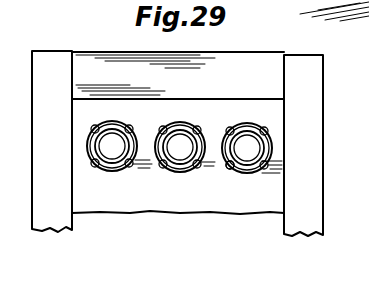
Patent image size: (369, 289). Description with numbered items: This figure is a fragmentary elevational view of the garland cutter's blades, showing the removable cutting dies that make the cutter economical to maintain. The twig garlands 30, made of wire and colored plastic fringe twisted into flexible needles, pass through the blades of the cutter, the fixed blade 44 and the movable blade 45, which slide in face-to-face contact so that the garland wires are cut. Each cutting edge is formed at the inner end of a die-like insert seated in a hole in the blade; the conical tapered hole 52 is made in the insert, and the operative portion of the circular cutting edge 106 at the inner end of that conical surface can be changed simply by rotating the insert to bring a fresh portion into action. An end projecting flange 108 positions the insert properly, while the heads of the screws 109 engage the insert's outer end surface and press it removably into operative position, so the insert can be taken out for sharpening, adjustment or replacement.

The twig garlands 30 is at (83, 118).
The fixed blade 44 is at (262, 62).
The movable blade 45 is at (218, 105).
The tapered hole 52 is at (113, 152).
The cutting edge 106 is at (247, 163).
The end projecting flange 108 is at (256, 124).
The screws 109 is at (229, 170).